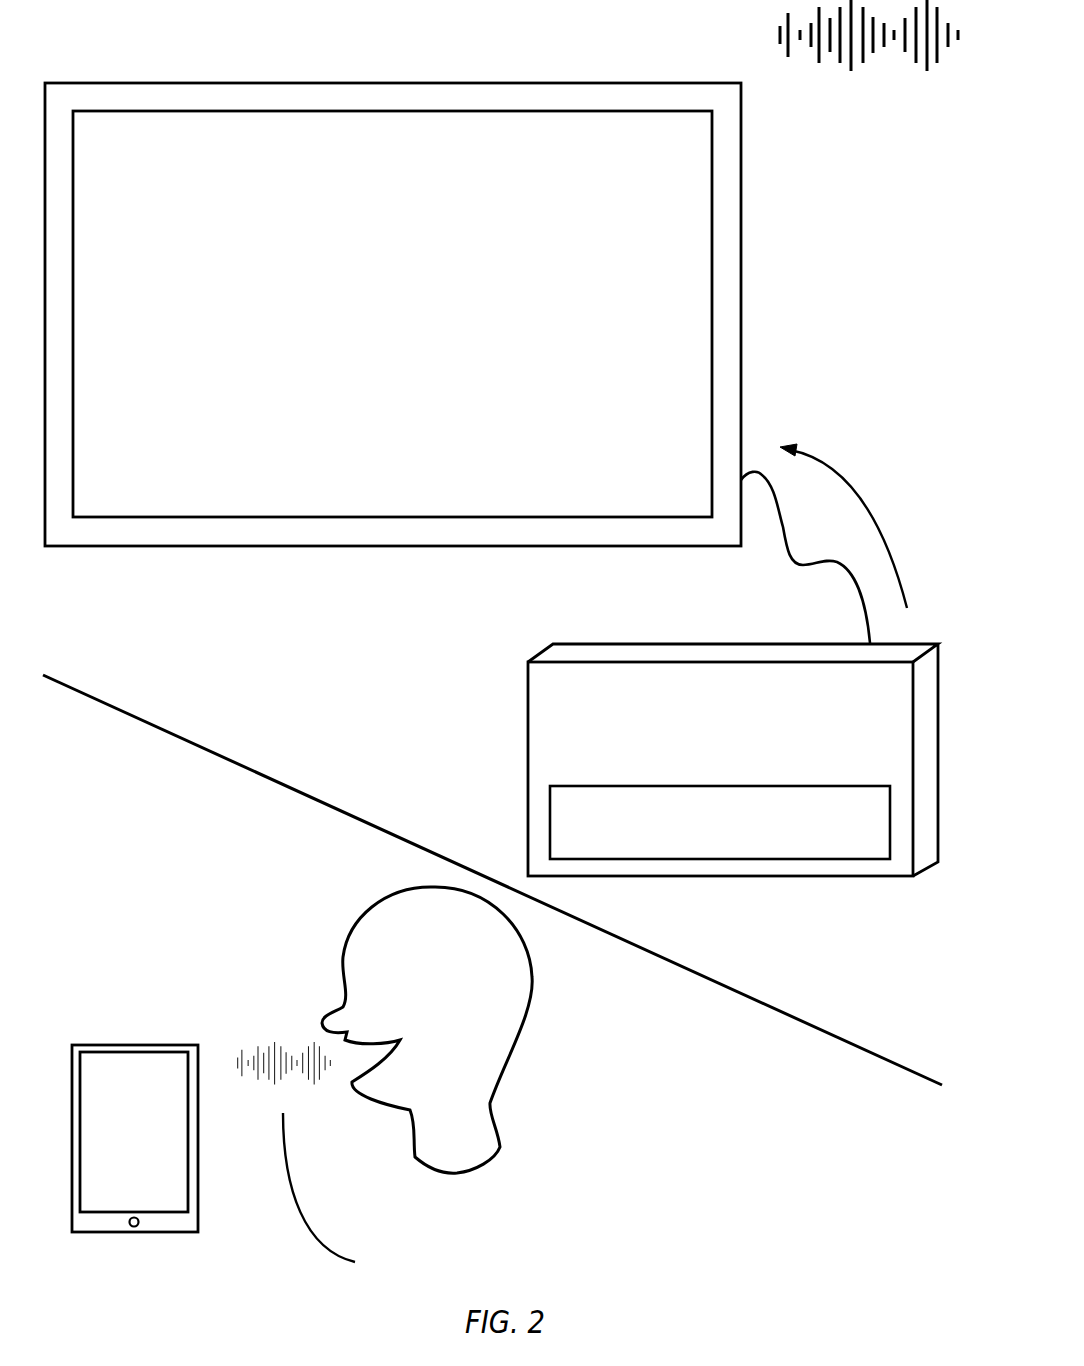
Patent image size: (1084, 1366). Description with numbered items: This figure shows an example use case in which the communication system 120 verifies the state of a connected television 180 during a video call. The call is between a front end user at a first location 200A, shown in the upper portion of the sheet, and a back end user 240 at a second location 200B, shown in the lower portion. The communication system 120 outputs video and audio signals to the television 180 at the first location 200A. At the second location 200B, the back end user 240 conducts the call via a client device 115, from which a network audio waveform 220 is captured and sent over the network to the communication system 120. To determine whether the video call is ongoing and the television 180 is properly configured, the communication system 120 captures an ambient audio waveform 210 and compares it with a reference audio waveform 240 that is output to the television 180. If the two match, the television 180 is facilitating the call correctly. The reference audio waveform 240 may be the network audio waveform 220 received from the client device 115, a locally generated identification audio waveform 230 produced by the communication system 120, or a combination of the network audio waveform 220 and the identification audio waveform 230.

The first location 200A is at (151, 33).
The second location 200B is at (492, 880).
The television 180 is at (413, 342).
The ambient audio waveform 210 is at (870, 101).
The reference audio waveform 240 is at (416, 1036).
The communication system 120 is at (741, 764).
The identification audio waveform 230 is at (738, 847).
The client device 115 is at (138, 1174).
The network audio waveform 220 is at (423, 1163).